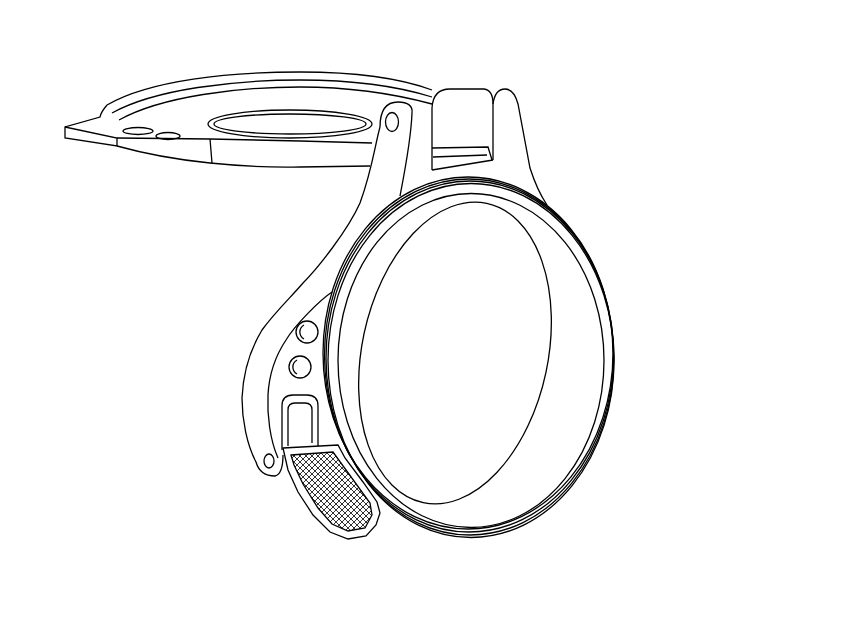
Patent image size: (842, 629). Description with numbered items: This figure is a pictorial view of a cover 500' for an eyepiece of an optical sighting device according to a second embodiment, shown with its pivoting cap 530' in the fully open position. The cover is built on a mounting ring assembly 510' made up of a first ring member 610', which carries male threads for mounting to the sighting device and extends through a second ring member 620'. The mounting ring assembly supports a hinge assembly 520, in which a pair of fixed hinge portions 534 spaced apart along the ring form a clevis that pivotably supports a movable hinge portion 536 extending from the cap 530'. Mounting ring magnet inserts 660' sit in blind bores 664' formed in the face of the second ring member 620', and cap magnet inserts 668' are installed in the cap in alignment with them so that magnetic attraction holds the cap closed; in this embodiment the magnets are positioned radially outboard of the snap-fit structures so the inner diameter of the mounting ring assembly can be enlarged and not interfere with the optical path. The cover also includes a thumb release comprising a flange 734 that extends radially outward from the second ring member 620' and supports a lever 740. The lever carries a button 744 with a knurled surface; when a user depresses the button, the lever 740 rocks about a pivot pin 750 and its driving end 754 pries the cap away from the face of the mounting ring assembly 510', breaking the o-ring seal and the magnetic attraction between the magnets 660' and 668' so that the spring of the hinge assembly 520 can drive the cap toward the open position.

The cover 500' is at (397, 291).
The mounting ring assembly 510' is at (526, 343).
The hinge assembly 520 is at (537, 108).
The cap 530' is at (248, 84).
The fixed hinge portions 534 is at (400, 108).
The movable hinge portion 536 is at (457, 100).
The first ring member 610' is at (530, 353).
The second ring member 620' is at (249, 347).
The mounting ring magnet inserts 660' is at (205, 309).
The blind bores 664' is at (199, 352).
The cap magnet inserts 668' is at (159, 75).
The flange 734 is at (277, 382).
The lever 740 is at (273, 493).
The button 744 is at (317, 530).
The pivot pin 750 is at (264, 461).
The driving end 754 is at (293, 417).